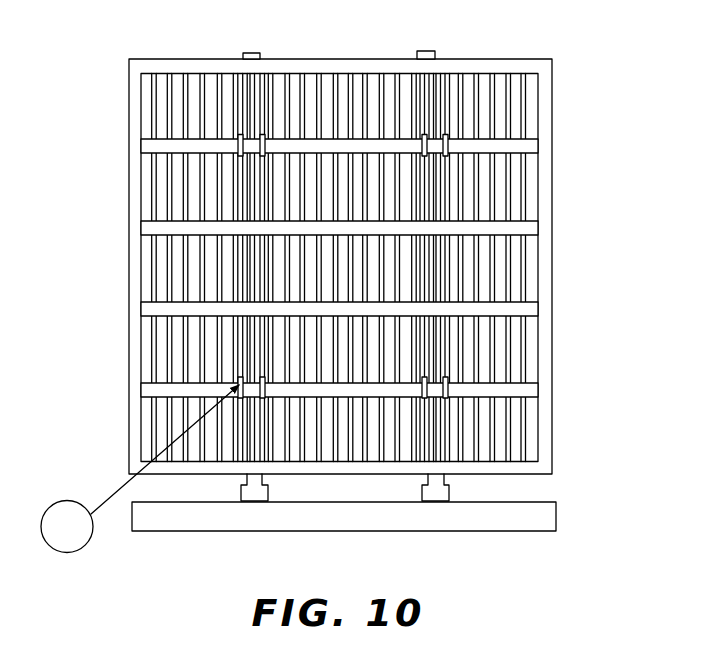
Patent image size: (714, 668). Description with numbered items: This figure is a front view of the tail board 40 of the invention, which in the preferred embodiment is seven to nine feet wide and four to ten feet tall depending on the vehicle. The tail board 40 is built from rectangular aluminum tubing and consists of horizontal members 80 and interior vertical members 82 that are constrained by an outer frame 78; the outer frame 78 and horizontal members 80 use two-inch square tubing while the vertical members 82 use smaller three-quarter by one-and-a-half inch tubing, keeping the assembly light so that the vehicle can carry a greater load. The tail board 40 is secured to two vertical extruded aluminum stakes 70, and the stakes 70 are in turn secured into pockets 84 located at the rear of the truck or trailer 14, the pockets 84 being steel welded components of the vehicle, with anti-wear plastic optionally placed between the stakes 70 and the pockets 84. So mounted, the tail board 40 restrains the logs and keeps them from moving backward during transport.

The truck or trailer 14 is at (450, 531).
The tail board 40 is at (480, 52).
The vertical extruded aluminum stakes 70 is at (262, 52).
The outer frame 78 is at (126, 386).
The horizontal members 80 is at (140, 144).
The vertical members 82 is at (153, 268).
The pockets 84 is at (265, 505).